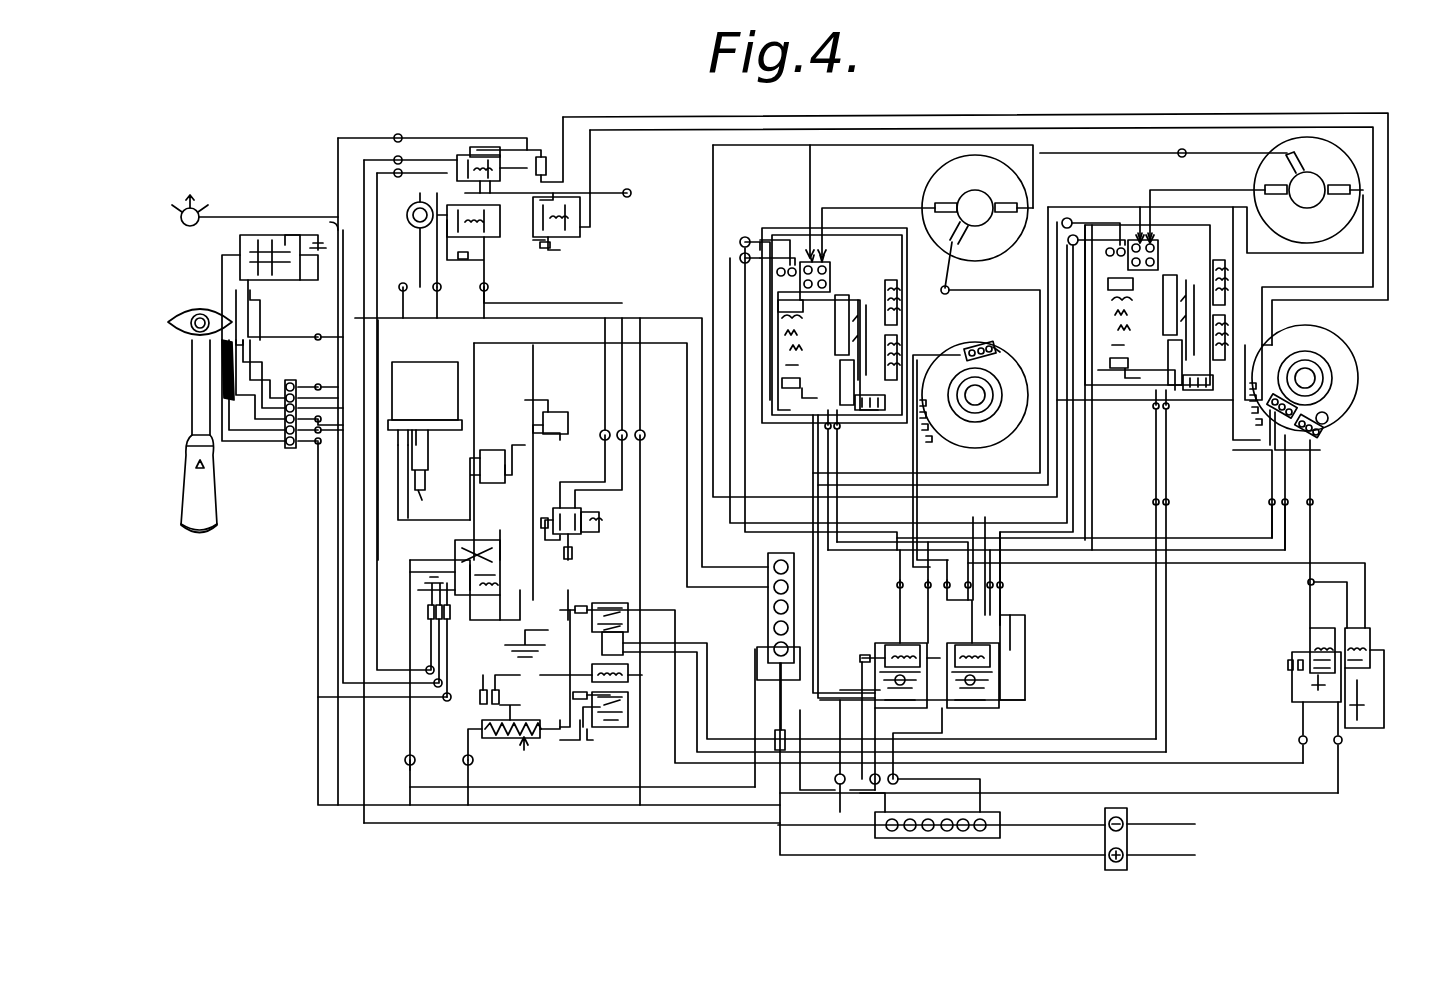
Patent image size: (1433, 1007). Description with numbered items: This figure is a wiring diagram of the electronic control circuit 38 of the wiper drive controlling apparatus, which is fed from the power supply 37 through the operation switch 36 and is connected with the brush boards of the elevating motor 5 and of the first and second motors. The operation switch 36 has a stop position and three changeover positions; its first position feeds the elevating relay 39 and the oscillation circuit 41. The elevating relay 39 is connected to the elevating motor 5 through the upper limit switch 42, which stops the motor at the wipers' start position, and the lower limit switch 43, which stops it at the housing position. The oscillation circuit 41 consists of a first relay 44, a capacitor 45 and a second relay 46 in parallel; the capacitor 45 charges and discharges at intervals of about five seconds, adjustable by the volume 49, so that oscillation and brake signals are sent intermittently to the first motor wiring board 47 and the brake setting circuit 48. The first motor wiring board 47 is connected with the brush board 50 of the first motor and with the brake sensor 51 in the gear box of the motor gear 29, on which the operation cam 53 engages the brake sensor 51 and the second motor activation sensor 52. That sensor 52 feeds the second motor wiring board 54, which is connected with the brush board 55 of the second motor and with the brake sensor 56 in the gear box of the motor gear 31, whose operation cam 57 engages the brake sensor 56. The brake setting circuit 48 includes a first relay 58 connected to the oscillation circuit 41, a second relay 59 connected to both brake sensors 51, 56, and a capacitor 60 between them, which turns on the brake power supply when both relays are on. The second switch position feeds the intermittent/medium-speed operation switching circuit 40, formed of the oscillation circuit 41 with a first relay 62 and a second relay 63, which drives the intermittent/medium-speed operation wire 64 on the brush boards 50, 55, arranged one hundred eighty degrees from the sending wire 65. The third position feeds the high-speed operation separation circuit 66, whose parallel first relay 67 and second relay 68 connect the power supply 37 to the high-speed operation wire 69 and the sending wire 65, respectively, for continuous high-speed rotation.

The elevating motor 5 is at (408, 370).
The motor gear 29 is at (1348, 360).
The motor gear 31 is at (990, 438).
The operation switch 36 is at (218, 510).
The power supply 37 is at (1105, 862).
The electronic control circuit 38 is at (598, 842).
The elevating relay 39 is at (470, 552).
The intermittent/medium-speed operation switching circuit 40 is at (460, 128).
The oscillation circuit 41 is at (652, 578).
The upper limit switch 42 is at (492, 450).
The lower limit switch 43 is at (570, 415).
The first relay 44 is at (565, 540).
The capacitor 45 is at (545, 642).
The second relay 46 is at (614, 662).
The first motor wiring board 47 is at (1200, 424).
The brake setting circuit 48 is at (1285, 698).
The volume 49 is at (410, 212).
The brush board 50 is at (1352, 158).
The brake sensor 51 is at (1322, 425).
The second motor activation sensor 52 is at (1268, 425).
The operation cam 53 is at (1330, 420).
The second motor wiring board 54 is at (876, 424).
The brush board 55 is at (938, 178).
The brake sensor 56 is at (982, 345).
The operation cam 57 is at (998, 352).
The first relay 58 is at (1308, 638).
The second relay 59 is at (1370, 642).
The capacitor 60 is at (1358, 725).
The first relay 62 is at (568, 236).
The second relay 63 is at (490, 158).
The intermittent/medium-speed operation wire 64 is at (875, 205).
The sending wire 65 is at (1038, 160).
The high-speed operation separation circuit 66 is at (1036, 660).
The first relay 67 is at (887, 643).
The second relay 68 is at (968, 712).
The high-speed operation wire 69 is at (942, 287).